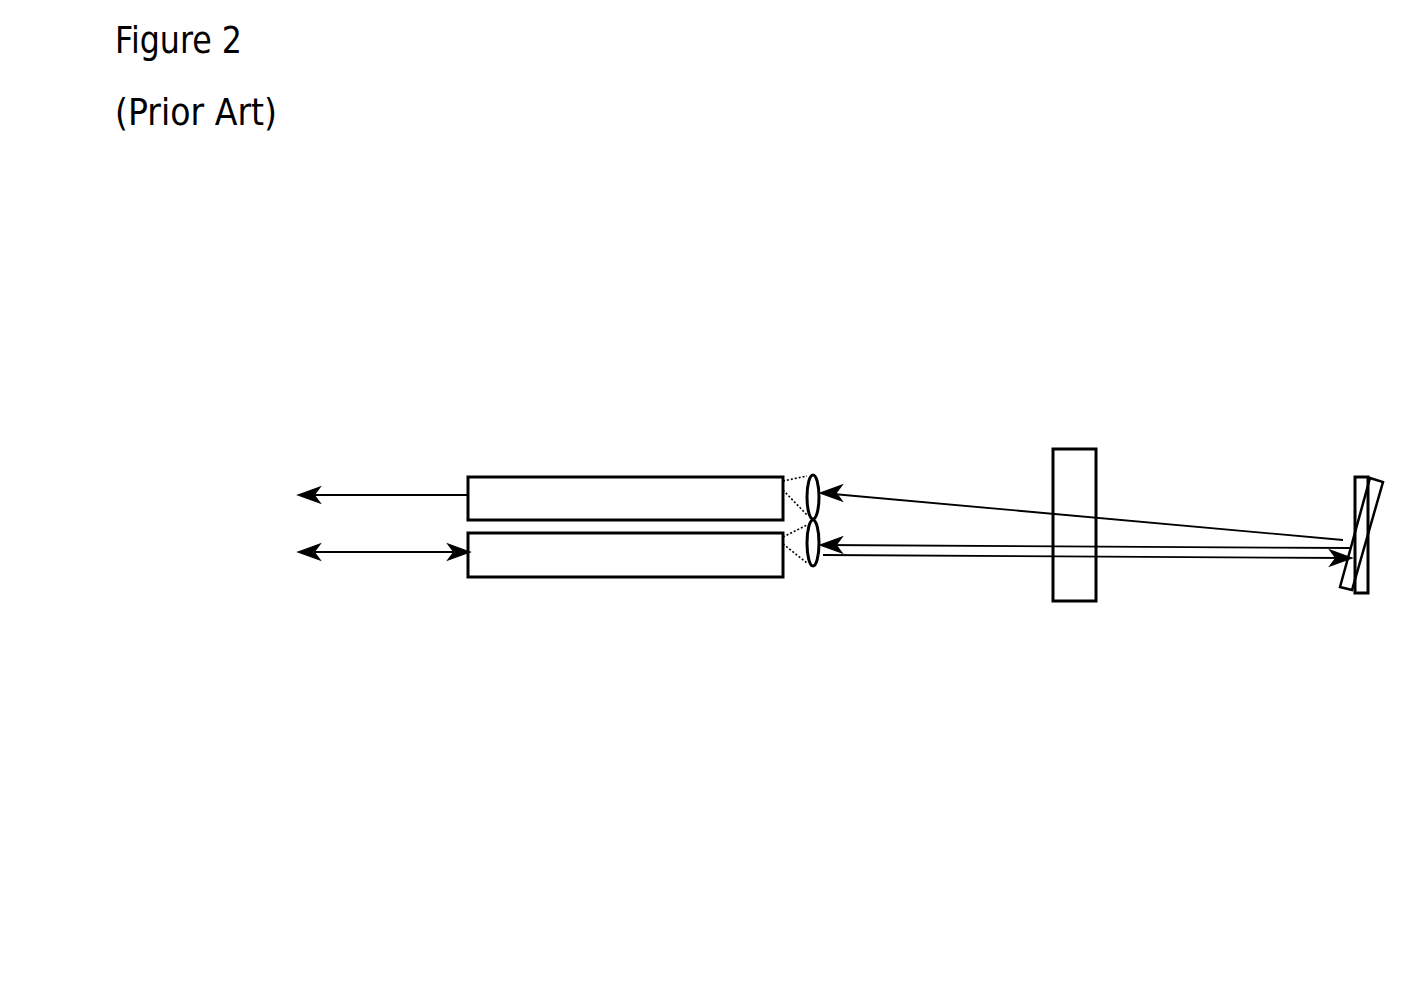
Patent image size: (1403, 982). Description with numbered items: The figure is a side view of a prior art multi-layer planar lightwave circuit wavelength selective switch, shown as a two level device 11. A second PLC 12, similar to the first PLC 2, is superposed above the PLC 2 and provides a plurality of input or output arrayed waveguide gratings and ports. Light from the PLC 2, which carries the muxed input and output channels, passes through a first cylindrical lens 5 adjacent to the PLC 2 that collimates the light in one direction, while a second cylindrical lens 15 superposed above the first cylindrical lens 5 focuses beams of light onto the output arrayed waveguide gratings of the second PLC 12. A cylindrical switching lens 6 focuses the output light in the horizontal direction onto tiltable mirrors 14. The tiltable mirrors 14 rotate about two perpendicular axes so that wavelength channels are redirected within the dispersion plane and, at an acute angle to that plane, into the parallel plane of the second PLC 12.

The two level device 11 is at (542, 327).
The second PLC 12 is at (571, 512).
The PLC 2 is at (548, 569).
The second cylindrical lens 15 is at (806, 476).
The first cylindrical lens 5 is at (812, 568).
The cylindrical switching lens 6 is at (1071, 593).
The tiltable mirrors 14 is at (1353, 594).